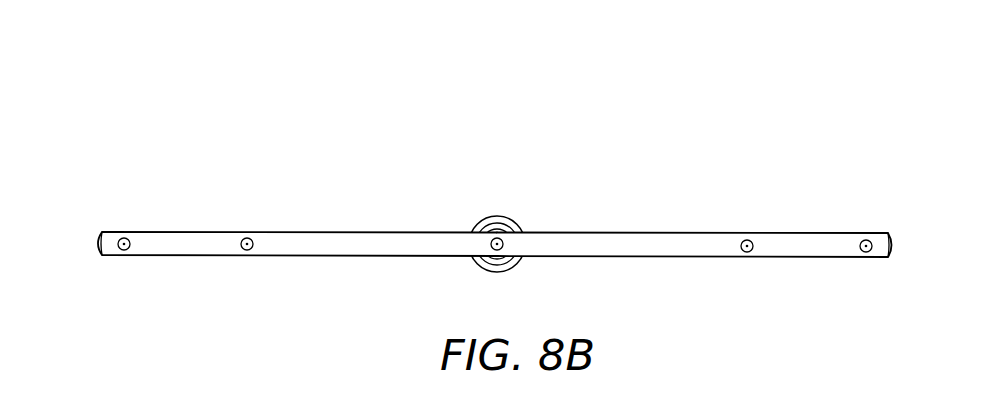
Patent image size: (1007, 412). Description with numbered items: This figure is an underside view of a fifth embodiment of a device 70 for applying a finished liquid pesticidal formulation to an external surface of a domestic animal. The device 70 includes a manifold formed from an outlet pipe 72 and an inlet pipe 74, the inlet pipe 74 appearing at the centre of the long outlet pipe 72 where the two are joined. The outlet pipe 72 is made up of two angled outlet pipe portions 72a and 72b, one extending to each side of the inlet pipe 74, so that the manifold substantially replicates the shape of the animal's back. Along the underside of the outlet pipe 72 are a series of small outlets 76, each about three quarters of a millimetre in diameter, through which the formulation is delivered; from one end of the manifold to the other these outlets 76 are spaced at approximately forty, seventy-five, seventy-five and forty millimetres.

The device 70 is at (652, 143).
The outlet pipe 72 is at (360, 236).
The angled outlet pipe portion 72a is at (292, 238).
The angled outlet pipe portion 72b is at (683, 240).
The inlet pipe 74 is at (494, 230).
The outlets 76 is at (241, 247).